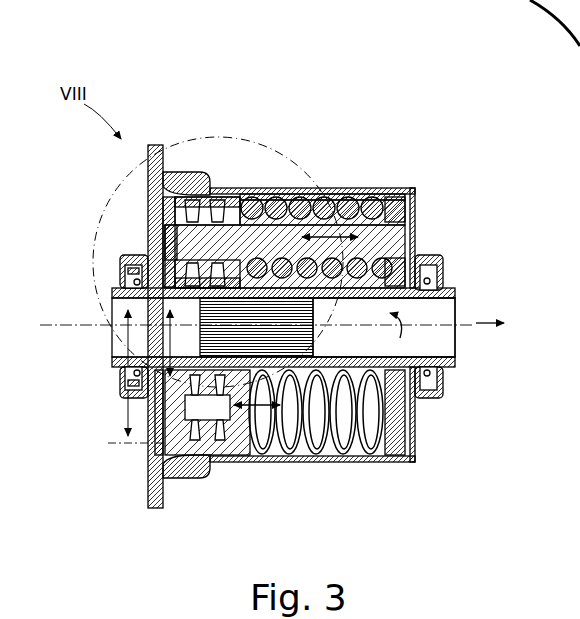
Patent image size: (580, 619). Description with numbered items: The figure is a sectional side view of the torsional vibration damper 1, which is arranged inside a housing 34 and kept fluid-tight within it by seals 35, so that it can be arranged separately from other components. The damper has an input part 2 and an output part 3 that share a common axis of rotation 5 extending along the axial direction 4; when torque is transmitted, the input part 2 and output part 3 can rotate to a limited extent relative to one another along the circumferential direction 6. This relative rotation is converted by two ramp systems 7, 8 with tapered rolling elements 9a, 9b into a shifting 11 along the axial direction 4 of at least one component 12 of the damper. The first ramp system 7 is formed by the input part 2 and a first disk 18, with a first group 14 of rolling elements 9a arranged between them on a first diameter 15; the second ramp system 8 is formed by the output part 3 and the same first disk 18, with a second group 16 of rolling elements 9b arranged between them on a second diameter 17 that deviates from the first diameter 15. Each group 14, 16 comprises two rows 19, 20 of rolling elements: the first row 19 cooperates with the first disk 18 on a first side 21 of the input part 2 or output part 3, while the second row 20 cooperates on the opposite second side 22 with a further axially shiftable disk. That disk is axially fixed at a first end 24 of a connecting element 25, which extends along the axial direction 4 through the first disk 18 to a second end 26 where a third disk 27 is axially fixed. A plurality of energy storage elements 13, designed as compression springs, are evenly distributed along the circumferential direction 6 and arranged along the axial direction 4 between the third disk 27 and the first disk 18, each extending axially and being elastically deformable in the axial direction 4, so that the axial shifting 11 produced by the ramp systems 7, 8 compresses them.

The torsional vibration damper 1 is at (467, 157).
The input part 2 is at (152, 145).
The output part 3 is at (456, 291).
The axial direction 4 is at (499, 324).
The axis of rotation 5 is at (548, 10).
The circumferential direction 6 is at (401, 334).
The first ramp system 7 is at (262, 188).
The second ramp system 8 is at (292, 200).
The rolling elements 9a is at (162, 215).
The rolling elements 9b is at (154, 286).
The shifting 11 is at (340, 200).
The component 12 is at (262, 190).
The energy storage elements 13 is at (380, 192).
The first group 14 is at (217, 150).
The first diameter 15 is at (140, 383).
The second group 16 is at (150, 263).
The second diameter 17 is at (210, 370).
The first disk 18 is at (236, 464).
The first row 19 is at (217, 80).
The second row 20 is at (187, 71).
The first side 21 is at (233, 128).
The second side 22 is at (157, 432).
The first end 24 is at (152, 242).
The connecting element 25 is at (318, 230).
The second end 26 is at (413, 210).
The third disk 27 is at (413, 425).
The housing 34 is at (413, 188).
The seals 35 is at (436, 268).